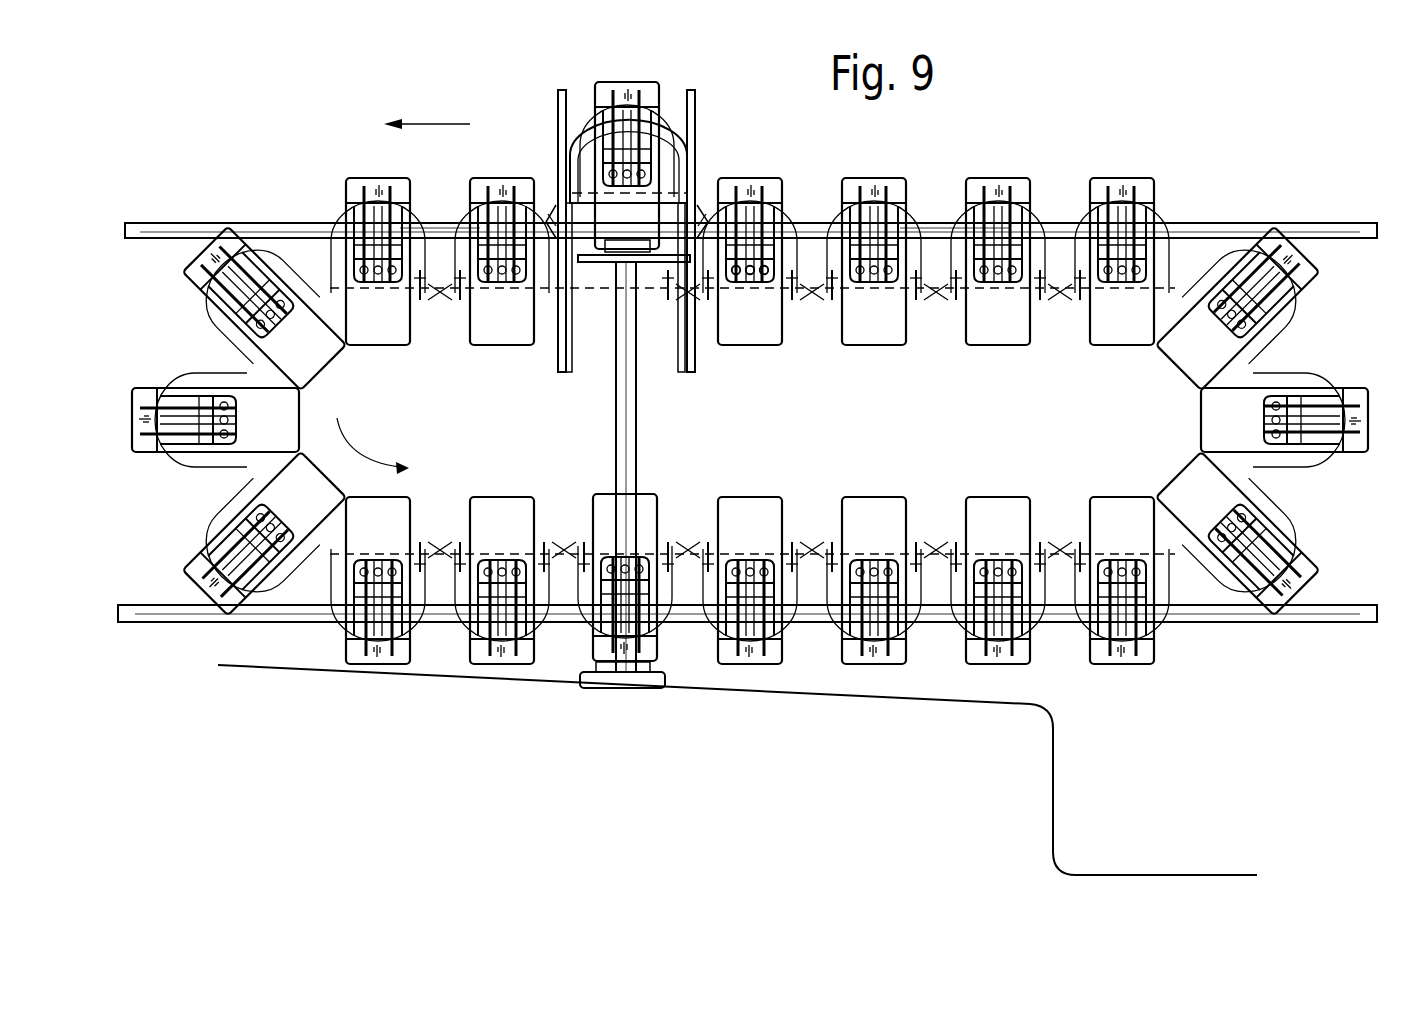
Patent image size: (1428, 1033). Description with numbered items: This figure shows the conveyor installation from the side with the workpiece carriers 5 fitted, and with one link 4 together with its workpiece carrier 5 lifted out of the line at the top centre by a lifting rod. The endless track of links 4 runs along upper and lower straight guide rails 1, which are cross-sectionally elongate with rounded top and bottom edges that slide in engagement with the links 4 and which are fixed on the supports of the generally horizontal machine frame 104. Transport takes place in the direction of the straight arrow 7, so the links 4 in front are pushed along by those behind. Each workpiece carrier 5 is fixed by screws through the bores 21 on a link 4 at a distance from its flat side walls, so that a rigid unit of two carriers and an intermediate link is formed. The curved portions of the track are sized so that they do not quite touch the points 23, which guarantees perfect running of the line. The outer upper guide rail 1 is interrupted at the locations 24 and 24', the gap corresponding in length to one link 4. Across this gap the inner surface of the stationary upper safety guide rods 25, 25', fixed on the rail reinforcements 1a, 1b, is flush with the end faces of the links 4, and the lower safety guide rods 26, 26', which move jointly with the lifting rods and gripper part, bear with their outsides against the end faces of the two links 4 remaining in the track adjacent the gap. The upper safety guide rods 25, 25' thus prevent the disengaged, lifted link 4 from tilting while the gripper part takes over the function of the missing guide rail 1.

The straight guide rail 1 is at (285, 228).
The rail reinforcement 1a is at (933, 227).
The rail reinforcement 1b is at (445, 223).
The link 4 is at (664, 564).
The workpiece carrier 5 is at (862, 190).
The arrow 7 is at (427, 105).
The bore 21 is at (768, 272).
The points 23 is at (345, 345).
The location of interruption 24 is at (732, 185).
The location of interruption 24' is at (534, 183).
The upper safety guide rod 25 is at (711, 227).
The upper safety guide rod 25' is at (544, 220).
The lower safety guide rod 26 is at (670, 323).
The lower safety guide rod 26' is at (542, 302).
The machine frame 104 is at (1050, 745).